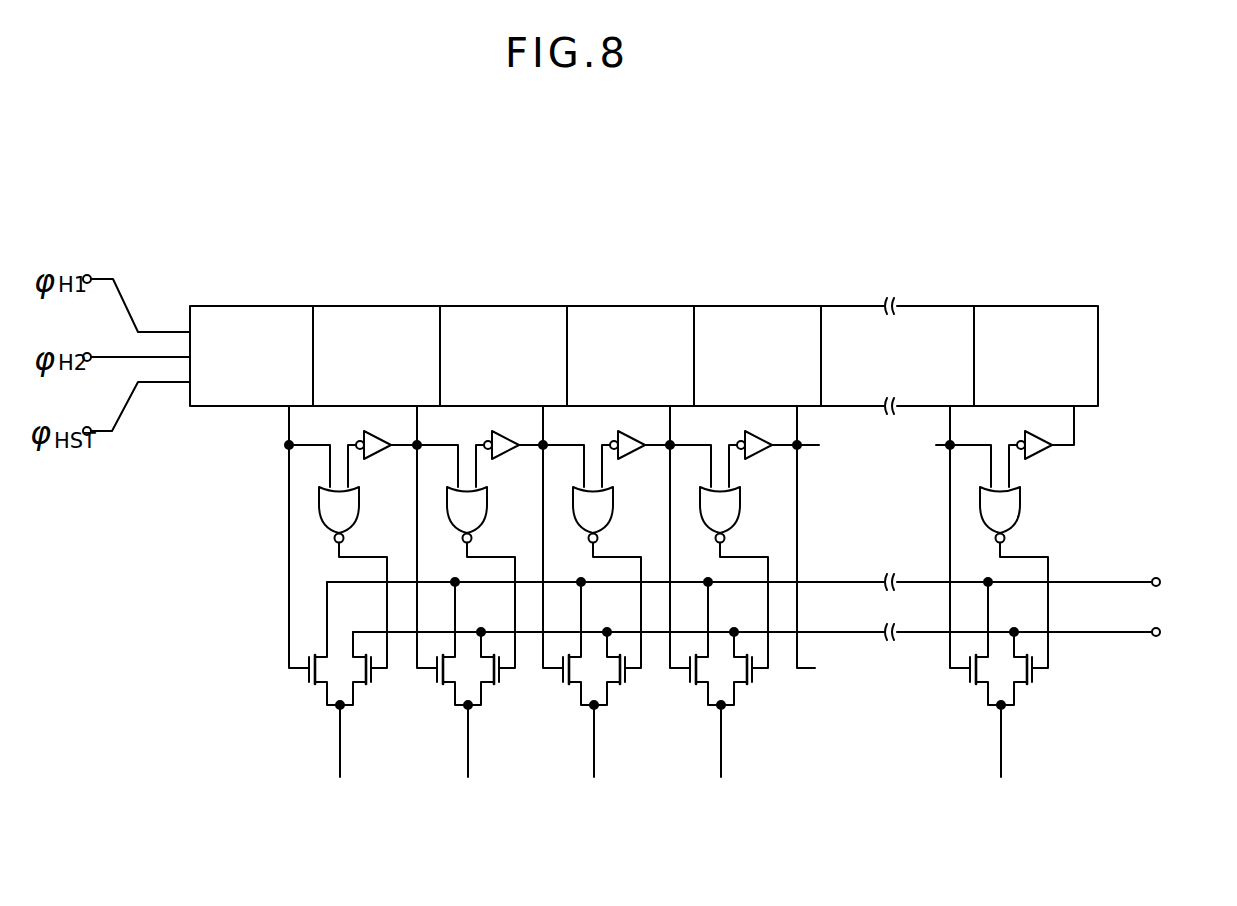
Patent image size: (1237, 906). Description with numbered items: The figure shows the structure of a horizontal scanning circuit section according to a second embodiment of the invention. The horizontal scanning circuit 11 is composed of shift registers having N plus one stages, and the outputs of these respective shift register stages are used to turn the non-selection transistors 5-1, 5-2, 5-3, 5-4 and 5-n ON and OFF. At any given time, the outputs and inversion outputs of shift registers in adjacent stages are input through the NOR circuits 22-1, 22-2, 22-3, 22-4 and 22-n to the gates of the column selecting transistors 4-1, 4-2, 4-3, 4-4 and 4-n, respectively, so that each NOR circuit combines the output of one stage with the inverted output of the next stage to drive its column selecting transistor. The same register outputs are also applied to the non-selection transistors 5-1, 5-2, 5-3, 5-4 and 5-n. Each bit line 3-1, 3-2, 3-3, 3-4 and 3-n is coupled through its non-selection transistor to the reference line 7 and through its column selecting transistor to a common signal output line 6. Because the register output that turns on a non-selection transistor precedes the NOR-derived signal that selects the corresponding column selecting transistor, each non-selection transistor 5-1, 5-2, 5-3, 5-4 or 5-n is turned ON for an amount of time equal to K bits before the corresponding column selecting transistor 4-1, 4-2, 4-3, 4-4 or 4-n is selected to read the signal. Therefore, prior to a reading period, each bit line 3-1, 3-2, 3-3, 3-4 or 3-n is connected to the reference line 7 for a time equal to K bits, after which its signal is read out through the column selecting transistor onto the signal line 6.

The horizontal scanning circuit 11 is at (1019, 306).
The NOR circuit 22-1 is at (357, 504).
The NOR circuit 22-2 is at (485, 504).
The NOR circuit 22-3 is at (611, 504).
The NOR circuit 22-4 is at (738, 504).
The NOR circuit 22-n is at (1018, 504).
The non-selection transistor 5-1 is at (319, 690).
The non-selection transistor 5-2 is at (447, 690).
The non-selection transistor 5-3 is at (573, 690).
The non-selection transistor 5-4 is at (700, 690).
The non-selection transistor 5-n is at (980, 690).
The column selecting transistor 4-1 is at (359, 687).
The column selecting transistor 4-2 is at (487, 687).
The column selecting transistor 4-3 is at (613, 687).
The column selecting transistor 4-4 is at (740, 687).
The column selecting transistor 4-n is at (1020, 687).
The bit line 3-1 is at (336, 764).
The bit line 3-2 is at (464, 764).
The bit line 3-3 is at (590, 764).
The bit line 3-4 is at (717, 764).
The bit line 3-n is at (995, 765).
The reference line 7 is at (1112, 582).
The signal output line 6 is at (1113, 632).